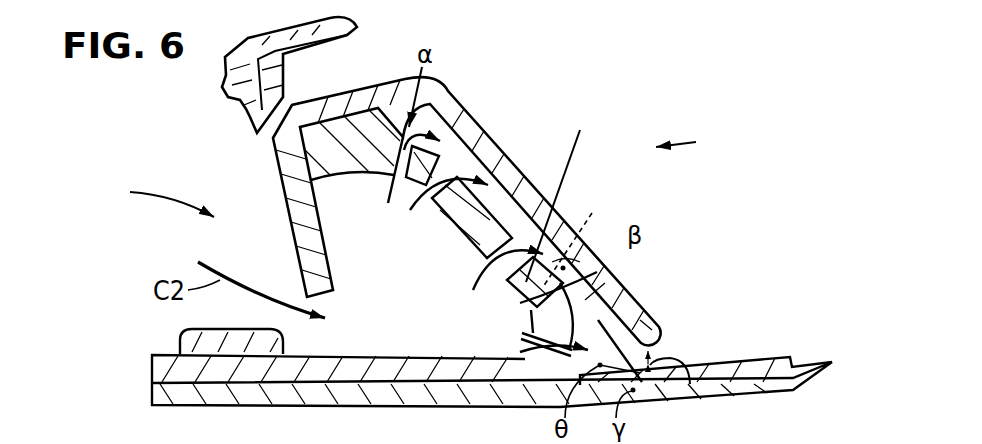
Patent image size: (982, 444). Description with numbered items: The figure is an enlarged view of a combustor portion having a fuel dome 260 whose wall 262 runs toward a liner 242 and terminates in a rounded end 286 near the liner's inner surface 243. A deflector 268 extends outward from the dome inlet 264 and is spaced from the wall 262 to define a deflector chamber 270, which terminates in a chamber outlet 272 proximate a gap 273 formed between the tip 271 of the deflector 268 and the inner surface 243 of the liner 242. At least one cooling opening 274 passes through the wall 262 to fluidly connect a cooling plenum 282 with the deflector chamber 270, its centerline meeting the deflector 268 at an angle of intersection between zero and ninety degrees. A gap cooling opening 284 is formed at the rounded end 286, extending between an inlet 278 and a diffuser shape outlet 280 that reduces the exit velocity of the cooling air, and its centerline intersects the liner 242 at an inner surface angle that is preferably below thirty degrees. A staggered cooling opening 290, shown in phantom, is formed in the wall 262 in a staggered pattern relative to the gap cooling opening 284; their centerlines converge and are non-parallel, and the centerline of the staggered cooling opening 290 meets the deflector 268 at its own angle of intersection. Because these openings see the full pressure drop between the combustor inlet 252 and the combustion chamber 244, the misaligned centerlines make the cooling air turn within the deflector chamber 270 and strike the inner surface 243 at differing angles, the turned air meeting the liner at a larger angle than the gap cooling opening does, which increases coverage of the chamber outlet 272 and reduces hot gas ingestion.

The liner 242 is at (750, 395).
The inner surface 243 is at (705, 362).
The combustion chamber 244 is at (699, 139).
The combustor inlet 252 is at (148, 196).
The fuel dome 260 is at (347, 160).
The wall 262 is at (466, 218).
The dome inlet 264 is at (348, 12).
The deflector 268 is at (597, 272).
The deflector chamber 270 is at (556, 252).
The tip 271 is at (647, 318).
The chamber outlet 272 is at (678, 351).
The gap 273 is at (690, 384).
The cooling opening 274 is at (409, 146).
The inlet 278 is at (505, 341).
The diffuser shape outlet 280 is at (576, 194).
The cooling plenum 282 is at (397, 271).
The gap cooling opening 284 is at (546, 348).
The rounded end 286 is at (605, 283).
The staggered cooling opening 290 is at (582, 235).